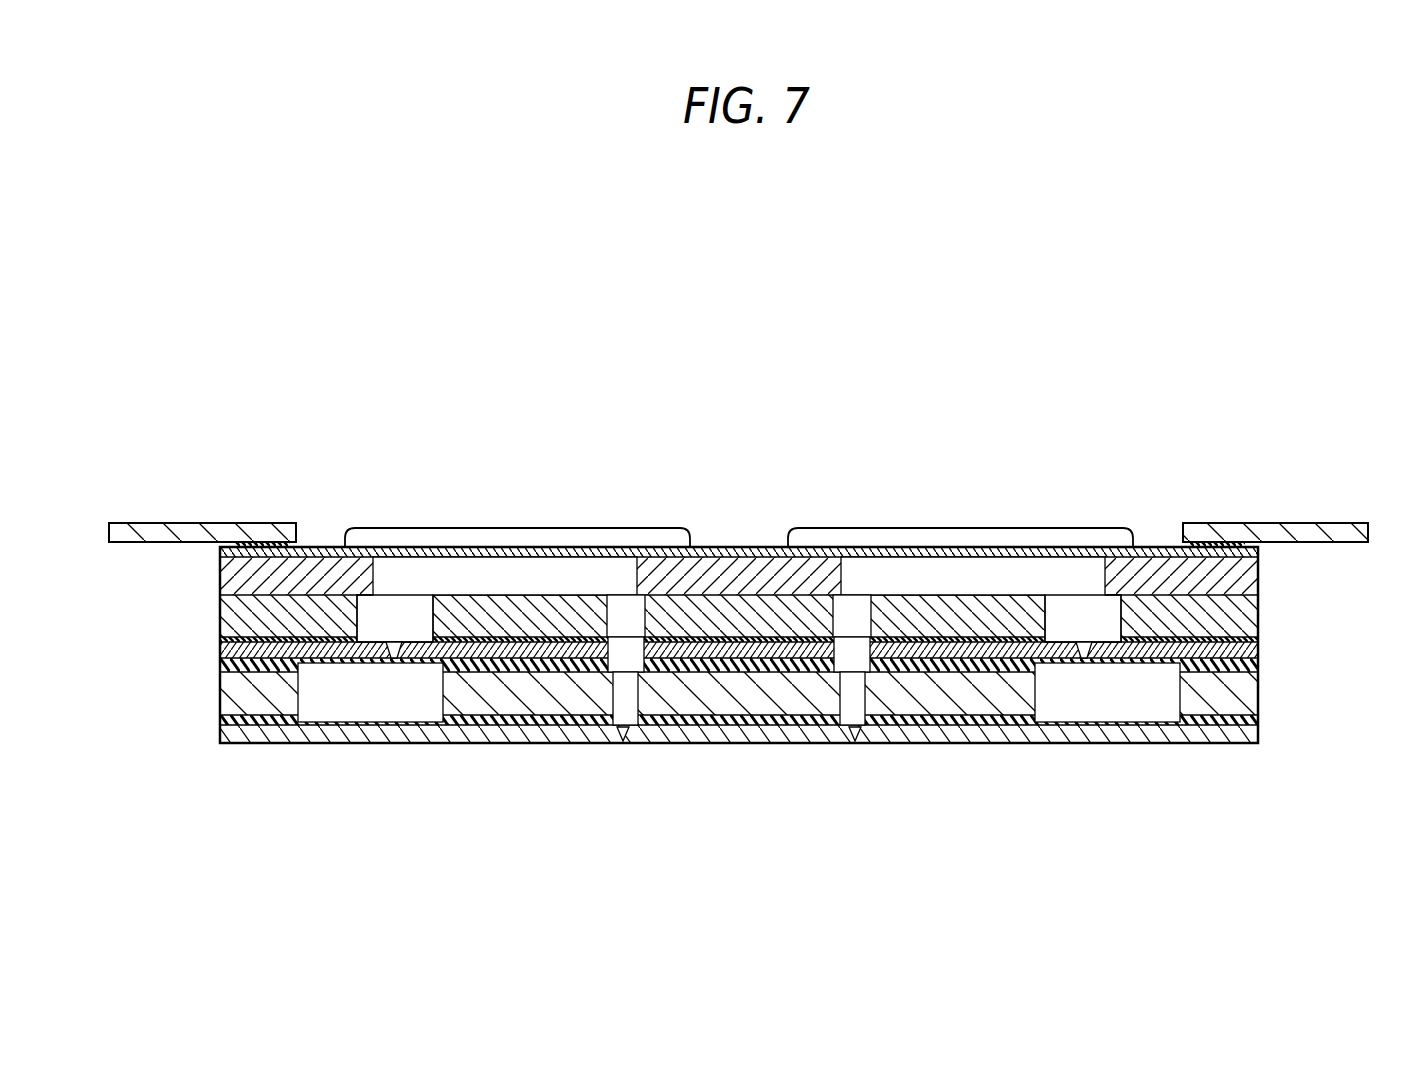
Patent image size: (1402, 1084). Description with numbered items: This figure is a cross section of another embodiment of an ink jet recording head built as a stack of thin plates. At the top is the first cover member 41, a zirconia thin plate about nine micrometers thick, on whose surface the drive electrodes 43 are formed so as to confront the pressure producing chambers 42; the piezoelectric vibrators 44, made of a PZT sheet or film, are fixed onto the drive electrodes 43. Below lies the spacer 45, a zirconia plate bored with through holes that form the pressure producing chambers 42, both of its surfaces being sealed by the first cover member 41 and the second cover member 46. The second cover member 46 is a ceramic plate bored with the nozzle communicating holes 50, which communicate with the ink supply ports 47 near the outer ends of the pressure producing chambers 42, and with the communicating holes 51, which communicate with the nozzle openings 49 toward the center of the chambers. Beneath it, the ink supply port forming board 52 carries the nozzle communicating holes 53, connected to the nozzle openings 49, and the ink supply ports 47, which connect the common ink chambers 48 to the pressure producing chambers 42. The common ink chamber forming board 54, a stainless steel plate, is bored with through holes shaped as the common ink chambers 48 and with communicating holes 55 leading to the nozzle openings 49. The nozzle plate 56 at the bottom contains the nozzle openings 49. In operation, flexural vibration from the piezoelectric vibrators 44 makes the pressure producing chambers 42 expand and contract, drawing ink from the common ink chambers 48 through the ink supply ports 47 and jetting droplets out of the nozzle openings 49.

The first cover member 41 is at (1250, 553).
The pressure producing chamber 42 is at (465, 580).
The drive electrode 43 is at (323, 545).
The piezoelectric vibrator 44 is at (517, 536).
The spacer 45 is at (1244, 583).
The second cover member 46 is at (1244, 620).
The ink supply port 47 is at (398, 660).
The common ink chamber 48 is at (327, 700).
The nozzle opening 49 is at (623, 737).
The nozzle communicating hole 50 is at (402, 613).
The communicating hole 51 is at (614, 612).
The ink supply port forming board 52 is at (1253, 646).
The nozzle communicating hole 53 is at (630, 653).
The common ink chamber forming board 54 is at (1245, 692).
The communicating hole 55 is at (623, 683).
The nozzle plate 56 is at (1243, 740).